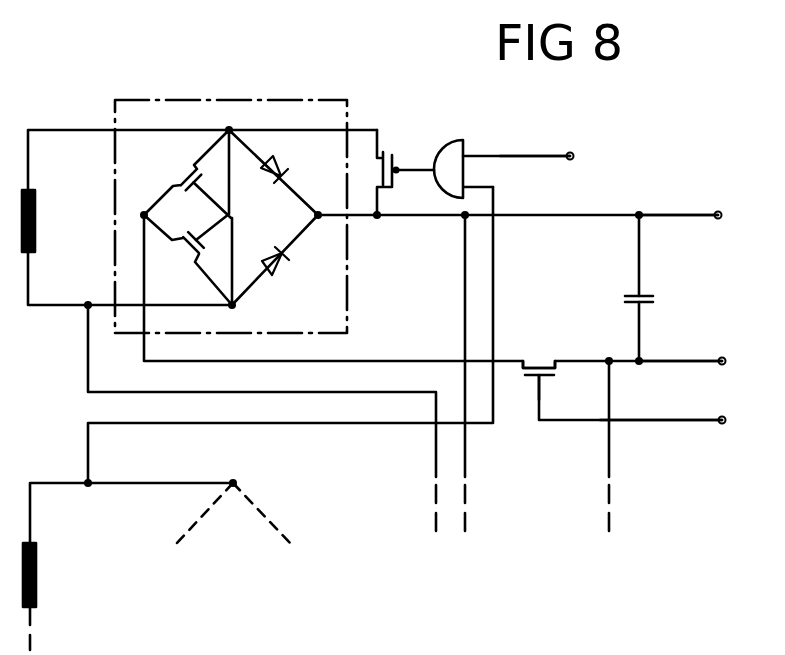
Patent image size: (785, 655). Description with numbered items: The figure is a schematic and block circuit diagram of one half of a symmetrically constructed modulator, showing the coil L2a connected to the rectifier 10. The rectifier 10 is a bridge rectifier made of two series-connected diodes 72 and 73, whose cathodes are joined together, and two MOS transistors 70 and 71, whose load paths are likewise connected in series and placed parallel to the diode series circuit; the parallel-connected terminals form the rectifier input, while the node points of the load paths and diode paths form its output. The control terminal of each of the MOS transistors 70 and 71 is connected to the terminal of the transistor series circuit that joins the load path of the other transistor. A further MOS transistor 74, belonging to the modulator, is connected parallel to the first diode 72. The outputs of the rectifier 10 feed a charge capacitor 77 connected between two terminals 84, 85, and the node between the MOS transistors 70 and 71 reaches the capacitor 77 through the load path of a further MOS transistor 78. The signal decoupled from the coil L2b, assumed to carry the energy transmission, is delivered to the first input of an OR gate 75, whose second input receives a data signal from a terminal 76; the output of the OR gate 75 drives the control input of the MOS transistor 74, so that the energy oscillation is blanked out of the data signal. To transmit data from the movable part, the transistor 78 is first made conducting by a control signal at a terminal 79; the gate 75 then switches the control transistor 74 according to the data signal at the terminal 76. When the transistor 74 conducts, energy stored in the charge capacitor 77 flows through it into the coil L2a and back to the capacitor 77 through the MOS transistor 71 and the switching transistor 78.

The rectifier 10 is at (347, 100).
The MOS transistor 70 is at (185, 177).
The MOS transistor 71 is at (184, 254).
The first diode 72 is at (289, 153).
The diode 73 is at (284, 274).
The MOS transistor 74 is at (386, 150).
The OR gate 75 is at (463, 141).
The terminal 76 is at (555, 155).
The charge capacitor 77 is at (656, 298).
The MOS transistor 78 is at (539, 358).
The terminal 79 is at (682, 419).
The terminal 84 is at (700, 212).
The terminal 85 is at (702, 360).
The coil L2a is at (53, 221).
The coil L2b is at (53, 575).